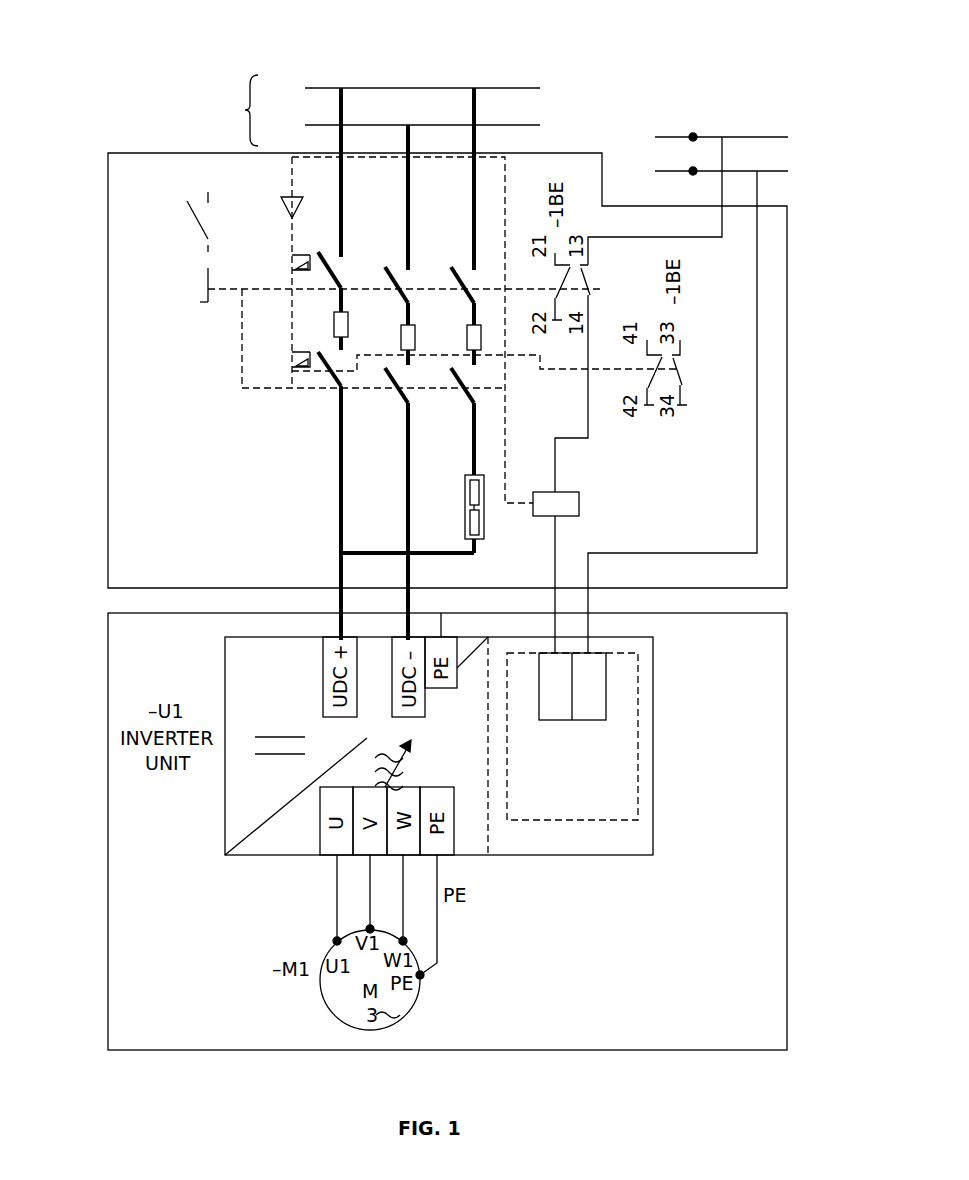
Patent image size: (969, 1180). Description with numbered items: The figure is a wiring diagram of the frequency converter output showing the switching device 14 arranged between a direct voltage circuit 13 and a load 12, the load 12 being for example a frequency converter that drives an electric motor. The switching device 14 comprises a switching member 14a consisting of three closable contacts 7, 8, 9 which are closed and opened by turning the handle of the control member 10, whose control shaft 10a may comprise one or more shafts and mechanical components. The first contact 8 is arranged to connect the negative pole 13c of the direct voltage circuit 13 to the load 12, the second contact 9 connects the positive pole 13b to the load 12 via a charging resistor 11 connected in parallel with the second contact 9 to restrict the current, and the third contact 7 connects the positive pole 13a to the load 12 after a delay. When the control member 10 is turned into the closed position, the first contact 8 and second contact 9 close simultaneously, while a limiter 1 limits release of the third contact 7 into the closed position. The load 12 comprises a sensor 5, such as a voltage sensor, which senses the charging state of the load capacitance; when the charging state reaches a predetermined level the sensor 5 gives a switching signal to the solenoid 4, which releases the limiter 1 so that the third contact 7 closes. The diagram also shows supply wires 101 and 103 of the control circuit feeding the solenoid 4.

The limiter 1 is at (290, 268).
The solenoid 4 is at (580, 504).
The sensor 5 is at (625, 715).
The third contact 7 is at (333, 378).
The first contact 8 is at (400, 395).
The second contact 9 is at (465, 394).
The control member 10 is at (206, 303).
The control shaft 10a is at (235, 289).
The charging resistor 11 is at (484, 525).
The load 12 is at (108, 648).
The direct voltage circuit 13 is at (314, 50).
The positive pole 13a is at (344, 108).
The positive pole 13b is at (411, 145).
The negative pole 13c is at (477, 108).
The switching device 14 is at (108, 503).
The switching member 14a is at (157, 221).
The neutral wire 101 is at (688, 407).
The line wire 103 is at (688, 188).